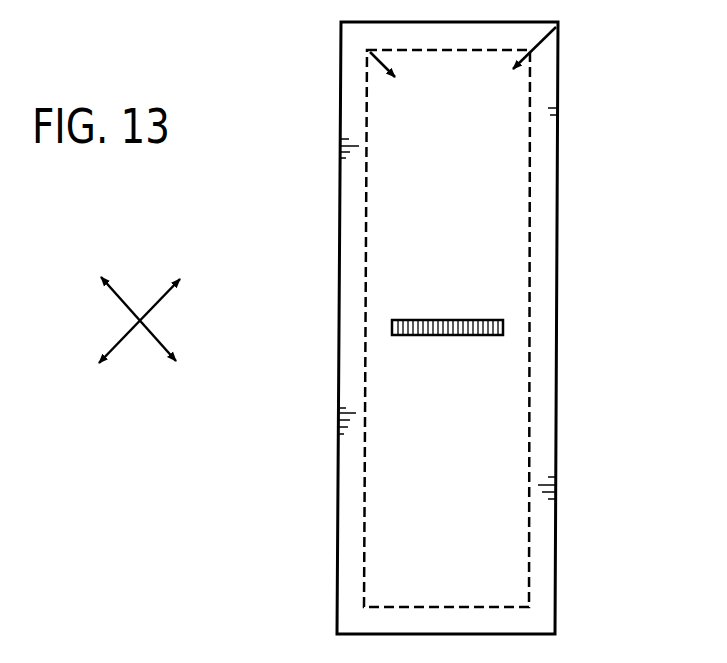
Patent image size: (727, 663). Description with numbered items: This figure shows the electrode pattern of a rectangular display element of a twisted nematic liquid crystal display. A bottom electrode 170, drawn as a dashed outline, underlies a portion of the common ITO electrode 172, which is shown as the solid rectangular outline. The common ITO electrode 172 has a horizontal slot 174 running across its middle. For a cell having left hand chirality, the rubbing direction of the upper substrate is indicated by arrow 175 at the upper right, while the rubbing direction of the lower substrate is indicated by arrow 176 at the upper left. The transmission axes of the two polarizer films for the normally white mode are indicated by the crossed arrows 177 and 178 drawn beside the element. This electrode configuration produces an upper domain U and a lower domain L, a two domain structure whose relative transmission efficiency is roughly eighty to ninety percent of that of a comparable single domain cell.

The bottom electrode 170 is at (530, 243).
The common ITO electrode 172 is at (558, 165).
The horizontal slot 174 is at (449, 335).
The arrow 175 is at (527, 60).
The arrow 176 is at (383, 66).
The arrow 177 is at (160, 340).
The arrow 178 is at (115, 341).